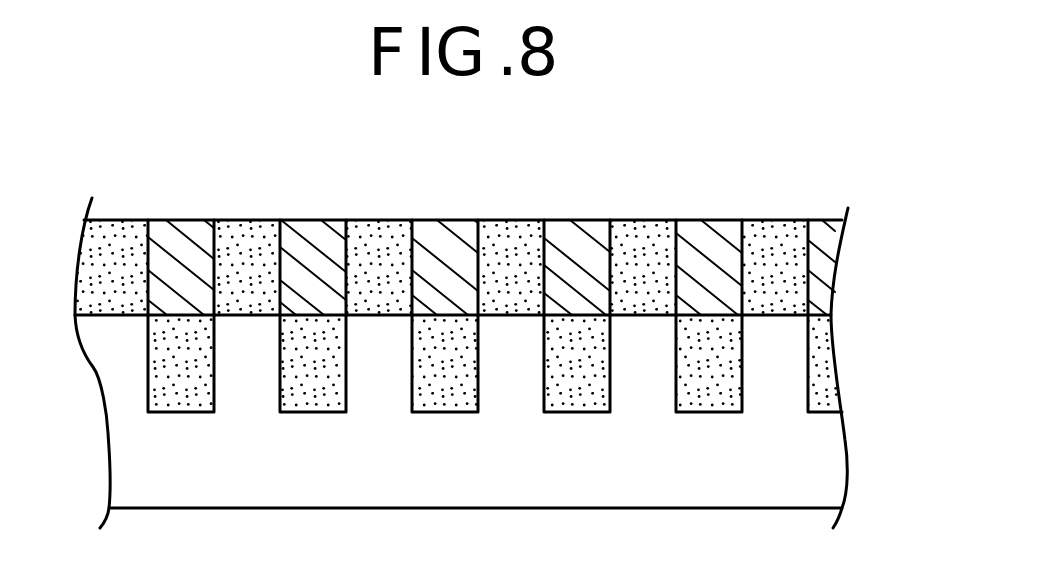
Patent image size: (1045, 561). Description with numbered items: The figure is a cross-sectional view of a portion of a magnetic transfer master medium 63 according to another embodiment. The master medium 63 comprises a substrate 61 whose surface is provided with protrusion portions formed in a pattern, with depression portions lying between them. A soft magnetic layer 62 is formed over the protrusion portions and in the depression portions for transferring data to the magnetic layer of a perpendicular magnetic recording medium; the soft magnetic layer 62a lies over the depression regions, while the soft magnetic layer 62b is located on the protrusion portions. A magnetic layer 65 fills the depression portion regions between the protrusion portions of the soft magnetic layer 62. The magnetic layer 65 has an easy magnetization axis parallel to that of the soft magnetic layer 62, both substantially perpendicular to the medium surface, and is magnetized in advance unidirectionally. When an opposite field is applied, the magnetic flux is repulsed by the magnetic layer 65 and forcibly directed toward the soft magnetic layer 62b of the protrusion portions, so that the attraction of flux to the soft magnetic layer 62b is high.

The substrate 61 is at (825, 470).
The soft magnetic layer 62 is at (527, 316).
The soft magnetic layer 62a is at (790, 277).
The soft magnetic layer of the protrusion portions 62b is at (534, 363).
The master medium 63 is at (800, 175).
The magnetic layer 65 is at (307, 237).